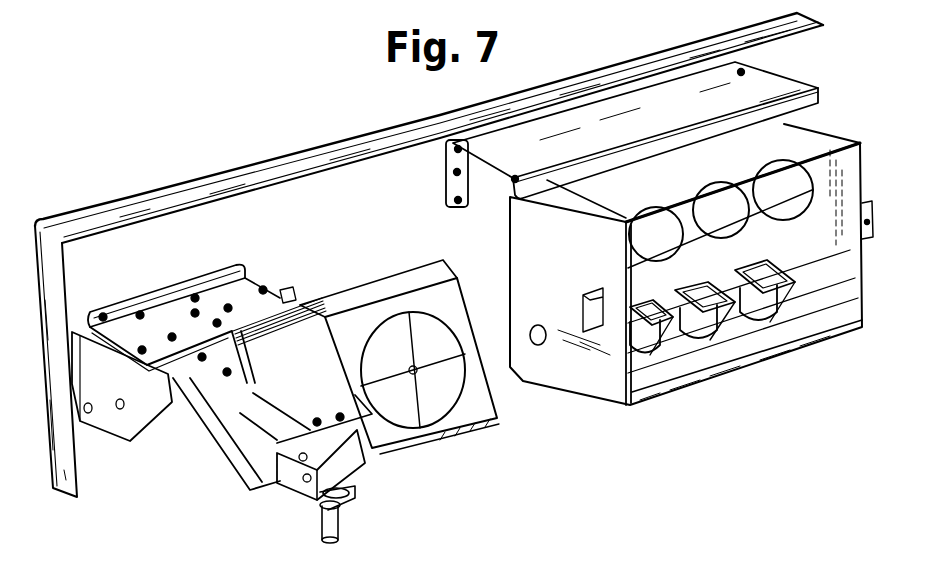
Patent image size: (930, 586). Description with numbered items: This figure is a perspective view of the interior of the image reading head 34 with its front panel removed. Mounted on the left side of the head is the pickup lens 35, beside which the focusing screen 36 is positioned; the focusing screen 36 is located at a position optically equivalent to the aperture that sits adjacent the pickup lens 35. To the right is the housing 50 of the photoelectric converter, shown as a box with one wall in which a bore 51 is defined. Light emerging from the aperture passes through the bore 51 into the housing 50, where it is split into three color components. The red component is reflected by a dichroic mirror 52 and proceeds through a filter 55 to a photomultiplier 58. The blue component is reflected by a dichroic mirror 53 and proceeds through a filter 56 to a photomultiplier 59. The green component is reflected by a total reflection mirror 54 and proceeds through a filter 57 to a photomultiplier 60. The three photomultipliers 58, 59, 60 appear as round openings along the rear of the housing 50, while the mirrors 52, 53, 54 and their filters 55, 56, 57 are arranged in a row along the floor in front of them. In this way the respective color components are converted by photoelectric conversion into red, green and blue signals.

The image reading head 34 is at (240, 160).
The pickup lens 35 is at (340, 533).
The focusing screen 36 is at (471, 432).
The housing 50 is at (612, 392).
The bore 51 is at (540, 326).
The dichroic mirror 52 is at (652, 358).
The dichroic mirror 53 is at (713, 342).
The total reflection mirror 54 is at (775, 323).
The filter 55 is at (633, 282).
The filter 56 is at (717, 290).
The filter 57 is at (778, 266).
The photomultiplier 58 is at (653, 214).
The photomultiplier 59 is at (714, 192).
The photomultiplier 60 is at (776, 180).